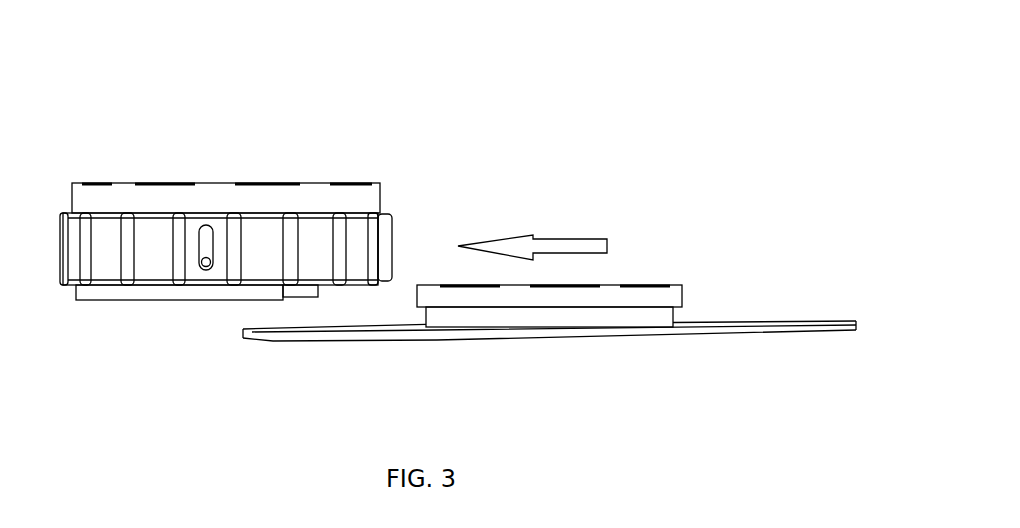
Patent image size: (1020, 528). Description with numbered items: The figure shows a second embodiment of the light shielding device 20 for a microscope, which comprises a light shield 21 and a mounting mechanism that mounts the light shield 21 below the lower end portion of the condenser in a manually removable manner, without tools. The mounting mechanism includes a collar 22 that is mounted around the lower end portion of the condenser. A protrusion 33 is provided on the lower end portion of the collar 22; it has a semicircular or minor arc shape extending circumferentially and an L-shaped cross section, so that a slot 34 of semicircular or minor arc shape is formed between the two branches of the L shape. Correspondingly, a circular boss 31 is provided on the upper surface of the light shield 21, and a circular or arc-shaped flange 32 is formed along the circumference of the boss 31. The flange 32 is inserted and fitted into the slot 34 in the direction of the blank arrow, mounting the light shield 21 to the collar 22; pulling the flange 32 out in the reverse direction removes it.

The light shielding device 20 is at (641, 155).
The light shield 21 is at (717, 333).
The collar 22 is at (347, 197).
The circular boss 31 is at (637, 315).
The flange 32 is at (677, 297).
The protrusion 33 is at (127, 292).
The slot 34 is at (298, 287).